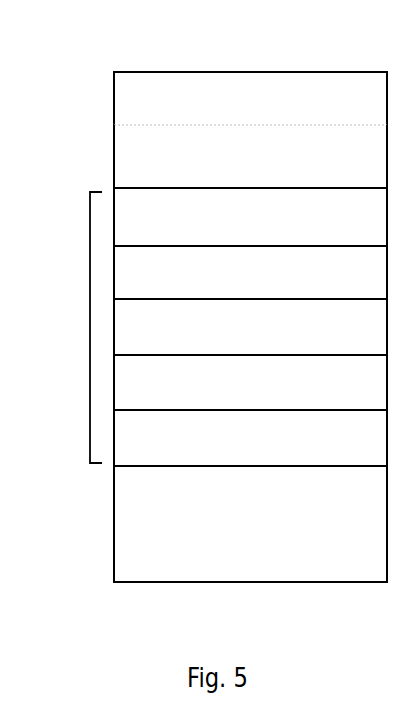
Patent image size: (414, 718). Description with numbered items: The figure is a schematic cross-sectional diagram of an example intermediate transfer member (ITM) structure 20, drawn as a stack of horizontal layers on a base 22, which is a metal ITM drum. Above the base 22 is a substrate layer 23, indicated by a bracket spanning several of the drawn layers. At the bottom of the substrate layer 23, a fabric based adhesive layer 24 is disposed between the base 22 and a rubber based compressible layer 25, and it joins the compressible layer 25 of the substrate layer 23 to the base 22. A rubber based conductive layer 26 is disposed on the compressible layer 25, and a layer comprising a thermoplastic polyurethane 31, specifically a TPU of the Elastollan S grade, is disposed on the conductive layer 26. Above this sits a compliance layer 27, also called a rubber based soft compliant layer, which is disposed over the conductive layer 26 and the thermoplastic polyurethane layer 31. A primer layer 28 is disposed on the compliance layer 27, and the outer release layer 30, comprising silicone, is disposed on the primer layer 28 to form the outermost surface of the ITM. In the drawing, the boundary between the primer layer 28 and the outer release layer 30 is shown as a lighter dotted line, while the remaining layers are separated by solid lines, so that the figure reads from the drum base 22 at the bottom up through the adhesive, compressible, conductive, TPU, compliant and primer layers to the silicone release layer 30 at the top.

The layer stack 20 is at (88, 101).
The base 22 is at (262, 537).
The substrate layer 23 is at (90, 328).
The adhesive layer 24 is at (265, 456).
The compressible layer 25 is at (262, 399).
The conductive layer 26 is at (262, 344).
The compliance layer 27 is at (262, 231).
The primer layer 28 is at (262, 174).
The outer release layer 30 is at (262, 117).
The layer comprising a thermoplastic polyurethane 31 is at (250, 272).